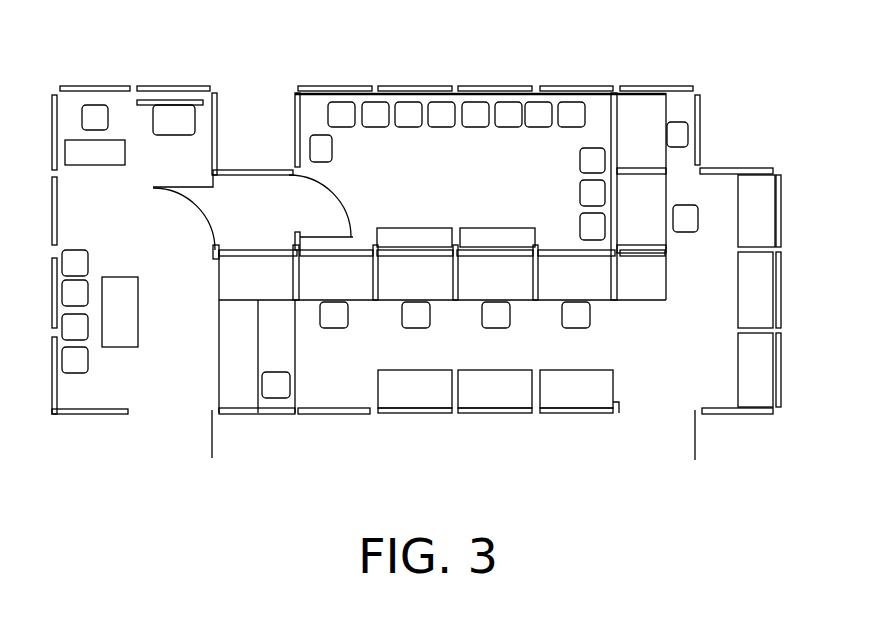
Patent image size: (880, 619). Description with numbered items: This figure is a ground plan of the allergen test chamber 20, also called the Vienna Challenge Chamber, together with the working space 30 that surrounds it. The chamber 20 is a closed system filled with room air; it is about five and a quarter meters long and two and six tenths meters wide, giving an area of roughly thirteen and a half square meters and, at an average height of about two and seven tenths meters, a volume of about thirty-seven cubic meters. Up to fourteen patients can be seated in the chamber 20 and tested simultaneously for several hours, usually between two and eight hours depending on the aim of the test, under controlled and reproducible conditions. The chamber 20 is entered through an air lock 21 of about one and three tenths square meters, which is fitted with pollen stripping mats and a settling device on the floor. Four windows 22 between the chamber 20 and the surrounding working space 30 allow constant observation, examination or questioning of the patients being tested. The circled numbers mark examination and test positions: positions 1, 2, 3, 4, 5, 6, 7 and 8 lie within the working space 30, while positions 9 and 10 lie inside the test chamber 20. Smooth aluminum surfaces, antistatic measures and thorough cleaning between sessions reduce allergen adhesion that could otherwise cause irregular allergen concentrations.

The examination and test position 1 is at (95, 135).
The examination and test position 2 is at (257, 331).
The examination and test position 3 is at (642, 278).
The examination and test position 4 is at (335, 296).
The examination and test position 5 is at (496, 296).
The examination and test position 6 is at (652, 148).
The examination and test position 7 is at (496, 296).
The examination and test position 8 is at (657, 225).
The examination and test position 9 is at (414, 232).
The examination and test position 10 is at (497, 232).
The allergen test chamber 20 is at (553, 152).
The air lock 21 is at (253, 195).
The windows 22 is at (567, 247).
The working space 30 is at (663, 368).